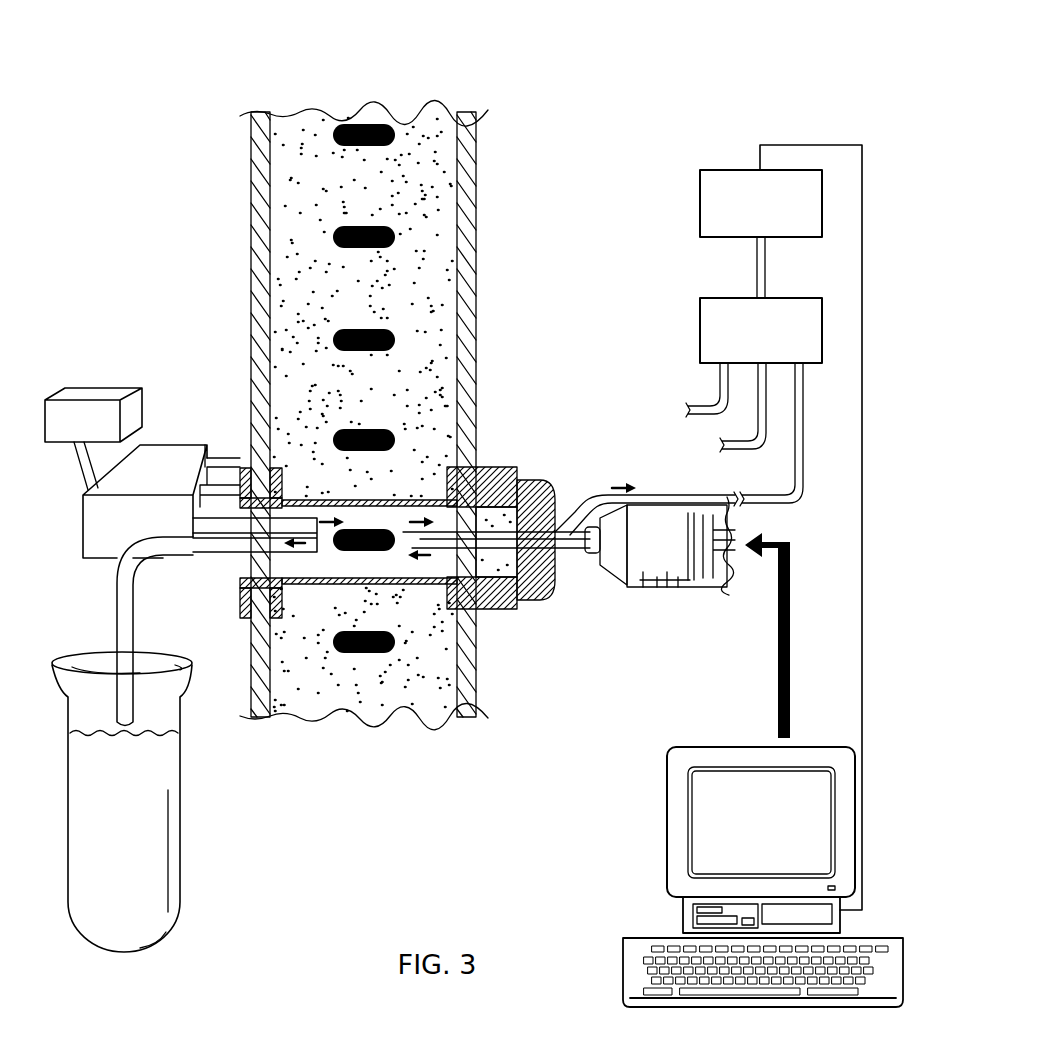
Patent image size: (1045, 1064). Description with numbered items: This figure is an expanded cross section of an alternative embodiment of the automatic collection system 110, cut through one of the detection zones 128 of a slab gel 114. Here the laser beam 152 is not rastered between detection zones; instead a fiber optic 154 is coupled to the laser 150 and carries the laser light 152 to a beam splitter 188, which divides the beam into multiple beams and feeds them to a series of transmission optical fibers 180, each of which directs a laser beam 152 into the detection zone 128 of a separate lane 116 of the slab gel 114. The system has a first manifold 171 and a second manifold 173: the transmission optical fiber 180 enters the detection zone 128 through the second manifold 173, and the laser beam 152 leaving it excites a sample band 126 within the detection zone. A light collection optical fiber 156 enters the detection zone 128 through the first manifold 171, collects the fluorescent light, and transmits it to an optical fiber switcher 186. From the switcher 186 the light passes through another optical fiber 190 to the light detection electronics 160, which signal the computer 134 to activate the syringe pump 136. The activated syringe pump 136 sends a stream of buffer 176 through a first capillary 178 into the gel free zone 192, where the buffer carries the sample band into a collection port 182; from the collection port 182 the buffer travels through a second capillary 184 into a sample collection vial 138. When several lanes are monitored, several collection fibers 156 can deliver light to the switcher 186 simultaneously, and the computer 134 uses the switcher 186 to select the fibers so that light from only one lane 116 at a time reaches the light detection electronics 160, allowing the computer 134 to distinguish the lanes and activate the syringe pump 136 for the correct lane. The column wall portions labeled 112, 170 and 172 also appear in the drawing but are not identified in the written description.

The automatic collection system 110 is at (492, 80).
The electrophoresis column 112 is at (298, 143).
The slab gel 114 is at (348, 193).
The lane 116 is at (349, 414).
The sample band 126 is at (382, 430).
The detection zone 128 is at (520, 518).
The computer 134 is at (700, 833).
The syringe pump 136 is at (655, 605).
The sample collection vial 138 is at (142, 827).
The laser 150 is at (95, 430).
The laser beam 152 is at (323, 507).
The fiber optic 154 is at (84, 472).
The light collection optical fiber 156 is at (720, 383).
The light detection electronics 160 is at (708, 215).
The right column wall portion 170 is at (476, 355).
The first manifold 171 is at (523, 482).
The left column wall portion 172 is at (251, 298).
The second manifold 173 is at (252, 450).
The stream of buffer 176 is at (477, 660).
The first capillary 178 is at (567, 550).
The transmission optical fiber 180 is at (220, 527).
The collection port 182 is at (258, 662).
The second capillary 184 is at (120, 609).
The optical fiber switcher 186 is at (787, 307).
The beam splitter 188 is at (145, 532).
The optical fiber 190 is at (757, 263).
The gel free zone 192 is at (332, 560).